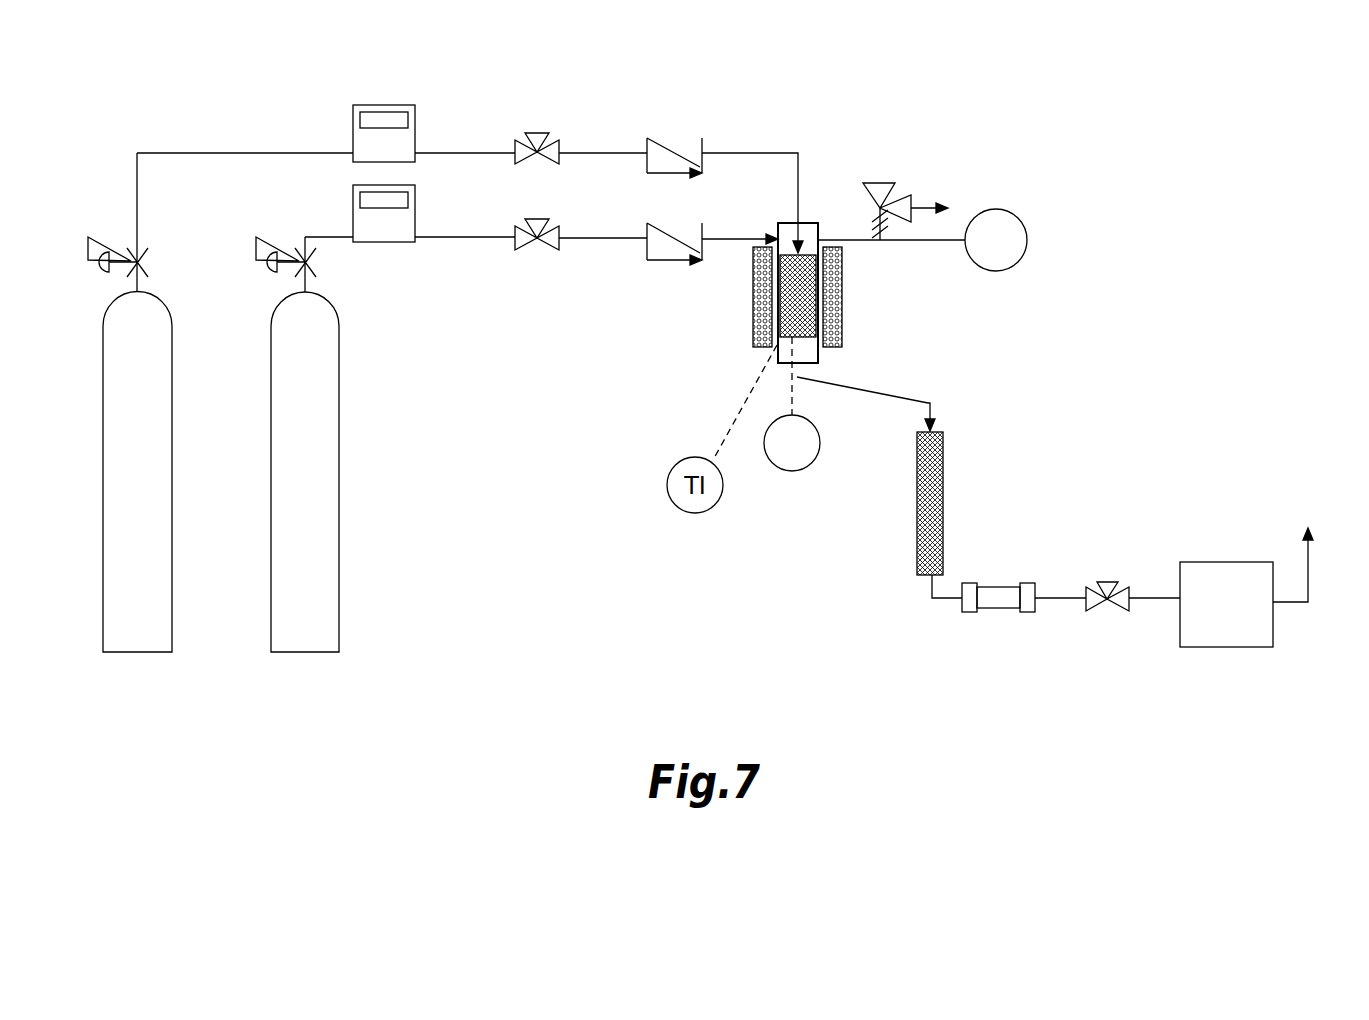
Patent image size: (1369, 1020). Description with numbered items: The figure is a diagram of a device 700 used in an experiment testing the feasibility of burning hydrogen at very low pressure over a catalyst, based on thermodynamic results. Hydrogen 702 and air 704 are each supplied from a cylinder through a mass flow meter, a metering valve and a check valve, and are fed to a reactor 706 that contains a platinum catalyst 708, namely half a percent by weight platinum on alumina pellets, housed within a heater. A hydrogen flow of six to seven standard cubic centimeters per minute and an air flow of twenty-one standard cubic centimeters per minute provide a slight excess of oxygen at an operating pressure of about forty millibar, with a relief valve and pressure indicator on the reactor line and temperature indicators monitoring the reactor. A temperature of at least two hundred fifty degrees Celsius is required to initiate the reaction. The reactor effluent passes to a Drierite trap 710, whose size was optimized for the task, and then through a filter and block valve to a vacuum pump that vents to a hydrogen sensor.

The device 700 is at (112, 160).
The hydrogen 702 is at (153, 368).
The air 704 is at (313, 356).
The reactor 706 is at (714, 305).
The platinum catalyst 708 is at (800, 323).
The Drierite trap 710 is at (943, 452).